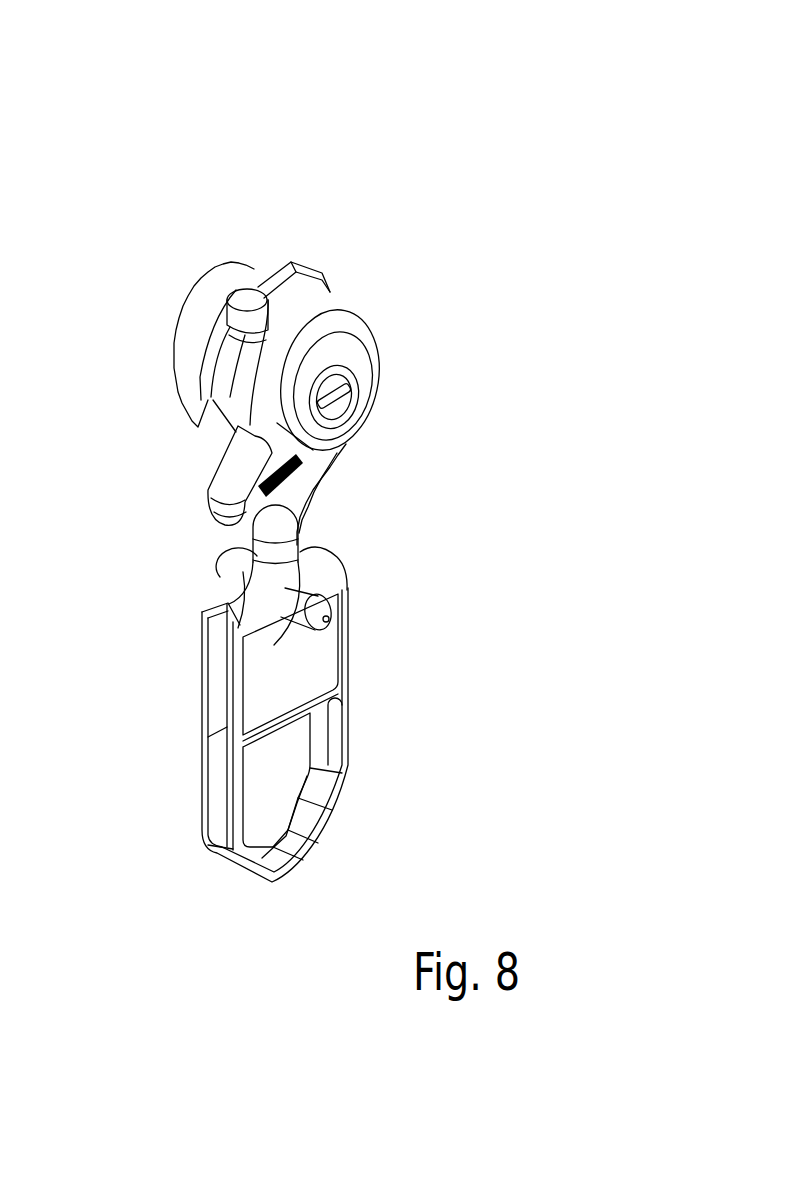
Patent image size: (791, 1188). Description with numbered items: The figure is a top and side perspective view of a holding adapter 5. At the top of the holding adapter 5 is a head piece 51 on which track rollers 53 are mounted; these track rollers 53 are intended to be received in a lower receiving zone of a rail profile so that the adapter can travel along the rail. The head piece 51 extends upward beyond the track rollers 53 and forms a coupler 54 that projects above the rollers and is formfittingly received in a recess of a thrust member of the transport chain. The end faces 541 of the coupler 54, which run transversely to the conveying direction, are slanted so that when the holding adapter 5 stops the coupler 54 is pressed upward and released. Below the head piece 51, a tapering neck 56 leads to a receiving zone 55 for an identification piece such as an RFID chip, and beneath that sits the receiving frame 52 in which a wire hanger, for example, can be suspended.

The holding adapter 5 is at (128, 893).
The head piece 51 is at (233, 475).
The receiving frame 52 is at (315, 765).
The track rollers 53 is at (218, 254).
The coupler 54 is at (331, 267).
The end faces 541 is at (248, 300).
The receiving zone 55 is at (217, 700).
The tapering neck 56 is at (267, 583).